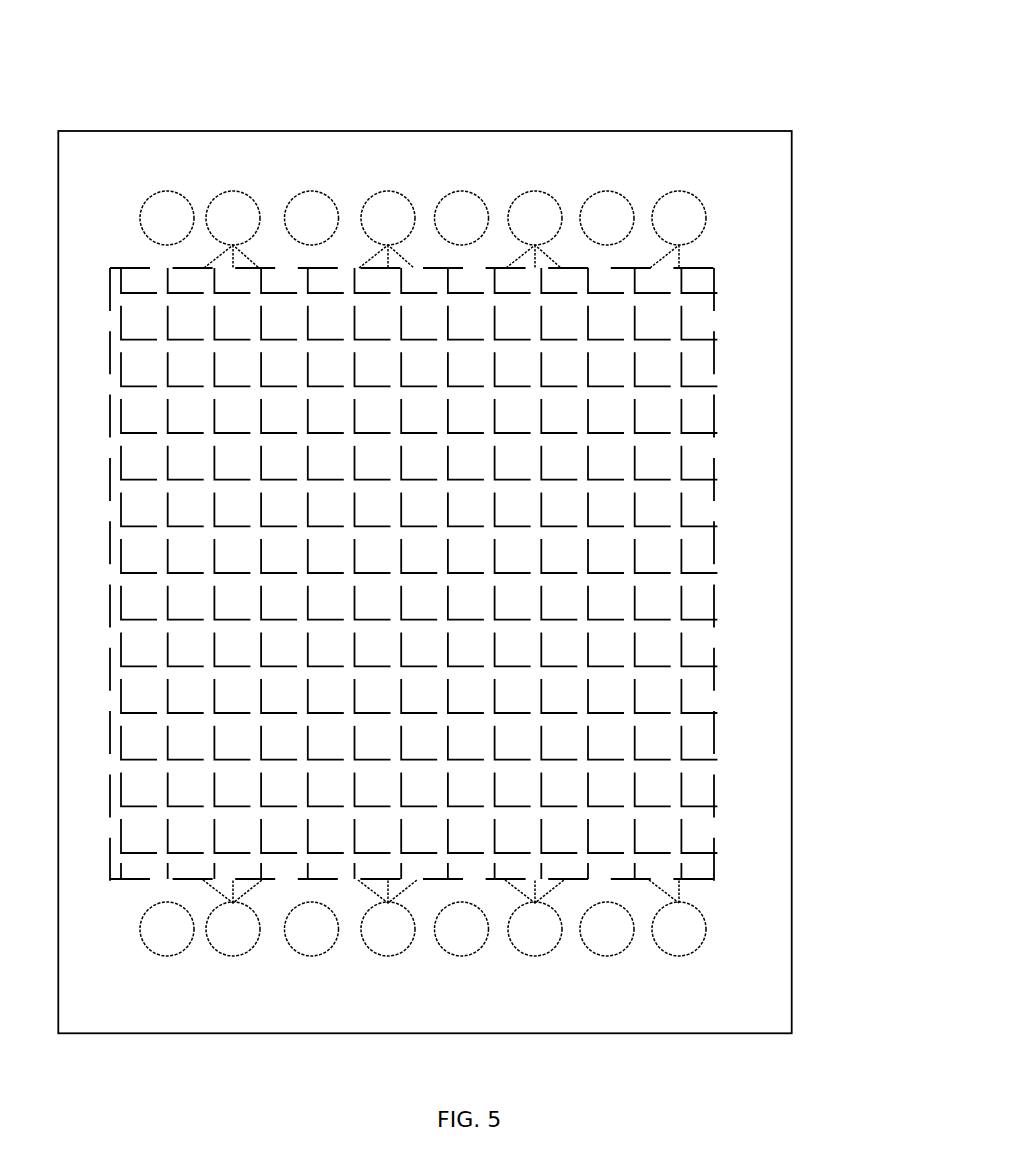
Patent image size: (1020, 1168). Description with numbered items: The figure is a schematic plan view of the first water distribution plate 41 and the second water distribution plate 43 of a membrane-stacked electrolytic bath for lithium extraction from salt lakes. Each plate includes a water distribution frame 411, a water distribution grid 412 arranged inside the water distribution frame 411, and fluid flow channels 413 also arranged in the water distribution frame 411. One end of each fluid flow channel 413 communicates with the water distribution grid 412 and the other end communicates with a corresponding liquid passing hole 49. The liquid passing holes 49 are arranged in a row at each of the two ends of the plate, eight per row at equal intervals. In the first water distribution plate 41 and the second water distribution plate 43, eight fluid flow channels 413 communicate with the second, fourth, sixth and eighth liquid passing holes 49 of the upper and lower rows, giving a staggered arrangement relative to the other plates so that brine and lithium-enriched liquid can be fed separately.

The first water distribution plate 41 is at (443, 63).
The second water distribution plate 43 is at (475, 553).
The water distribution frame 411 is at (767, 199).
The water distribution grid 412 is at (690, 365).
The fluid flow channel 413 is at (548, 250).
The liquid passing hole 49 is at (664, 212).